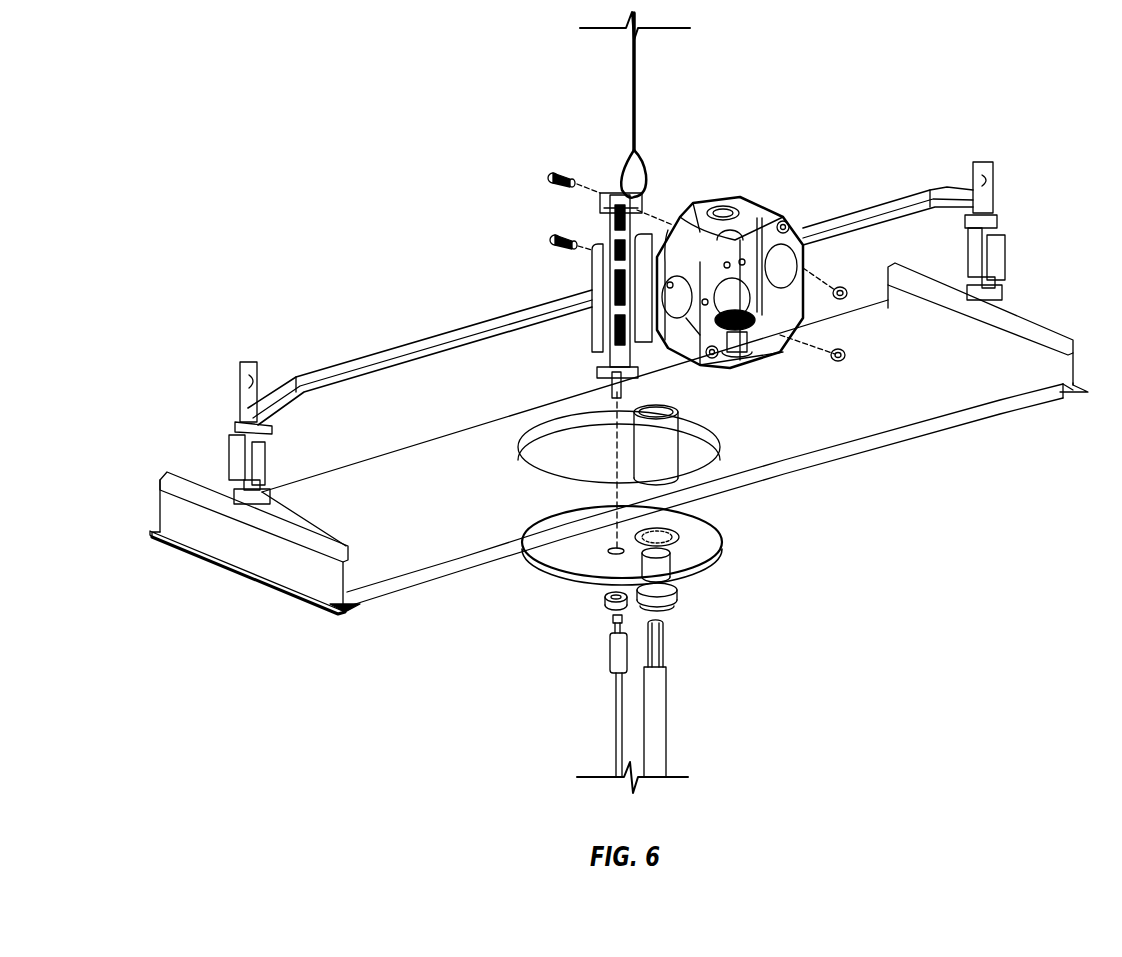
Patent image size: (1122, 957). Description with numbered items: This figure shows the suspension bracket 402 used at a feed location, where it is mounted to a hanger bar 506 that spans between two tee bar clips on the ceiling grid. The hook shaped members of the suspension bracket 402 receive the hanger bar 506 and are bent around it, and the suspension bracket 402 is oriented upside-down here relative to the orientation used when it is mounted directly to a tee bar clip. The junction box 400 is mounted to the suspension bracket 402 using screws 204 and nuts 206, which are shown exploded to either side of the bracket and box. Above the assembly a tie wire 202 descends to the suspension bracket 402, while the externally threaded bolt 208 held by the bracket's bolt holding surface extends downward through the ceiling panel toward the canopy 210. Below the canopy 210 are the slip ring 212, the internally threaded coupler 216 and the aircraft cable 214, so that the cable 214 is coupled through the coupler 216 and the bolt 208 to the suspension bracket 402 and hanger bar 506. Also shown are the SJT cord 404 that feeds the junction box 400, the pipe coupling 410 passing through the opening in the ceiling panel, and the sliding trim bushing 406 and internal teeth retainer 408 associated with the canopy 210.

The tie wire 202 is at (638, 92).
The screw 204 is at (550, 180).
The nut 206 is at (842, 300).
The bolt 208 is at (610, 390).
The canopy 210 is at (718, 566).
The slip ring 212 is at (603, 600).
The aircraft cable 214 is at (610, 626).
The coupler 216 is at (610, 665).
The junction box 400 is at (753, 197).
The suspension bracket 402 is at (610, 195).
The SJT cord 404 is at (660, 742).
The sliding trim bushing 406 is at (665, 572).
The internal teeth retainer 408 is at (680, 540).
The pipe coupling 410 is at (668, 440).
The hanger bar 506 is at (455, 325).